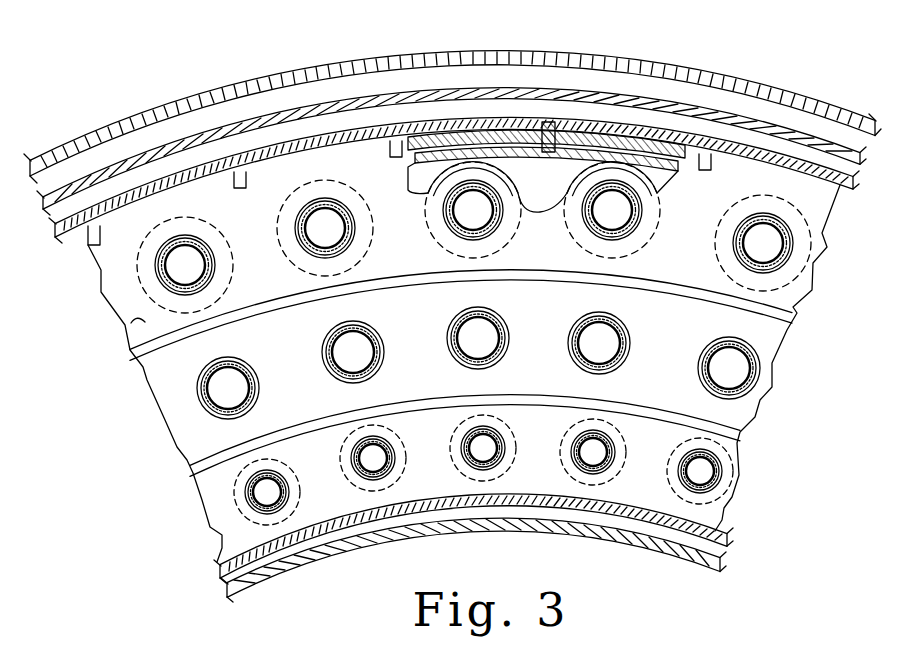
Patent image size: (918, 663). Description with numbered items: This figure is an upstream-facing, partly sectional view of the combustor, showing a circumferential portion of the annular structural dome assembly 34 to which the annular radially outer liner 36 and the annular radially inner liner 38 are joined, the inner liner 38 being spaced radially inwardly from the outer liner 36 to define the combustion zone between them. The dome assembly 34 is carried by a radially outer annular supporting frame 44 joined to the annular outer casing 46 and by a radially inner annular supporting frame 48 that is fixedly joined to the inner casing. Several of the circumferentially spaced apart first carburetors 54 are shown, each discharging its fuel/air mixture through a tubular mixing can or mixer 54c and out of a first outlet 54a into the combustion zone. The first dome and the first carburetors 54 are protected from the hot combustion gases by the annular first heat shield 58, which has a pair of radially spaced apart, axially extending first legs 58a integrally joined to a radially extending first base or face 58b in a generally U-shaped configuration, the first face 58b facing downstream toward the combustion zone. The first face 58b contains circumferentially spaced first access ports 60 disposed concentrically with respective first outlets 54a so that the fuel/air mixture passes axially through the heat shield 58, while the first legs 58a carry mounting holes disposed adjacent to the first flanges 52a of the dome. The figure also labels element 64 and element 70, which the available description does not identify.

The annular structural dome assembly 34 is at (114, 397).
The radially outer liner 36 is at (640, 124).
The radially inner liner 38 is at (217, 571).
The radially outer supporting frame 44 is at (383, 92).
The outer casing 46 is at (362, 61).
The radially inner supporting frame 48 is at (228, 600).
The first flanges 52a is at (573, 160).
The first carburetors 54 is at (285, 226).
The first outlet 54a is at (345, 210).
The tubular mixing can or mixer 54c is at (512, 207).
The first heat shield 58 is at (98, 294).
The first legs 58a is at (449, 147).
The first base or face 58b is at (127, 326).
The first access ports 60 is at (793, 241).
The locating pin 64 is at (550, 122).
The cooling holes 70 is at (712, 348).